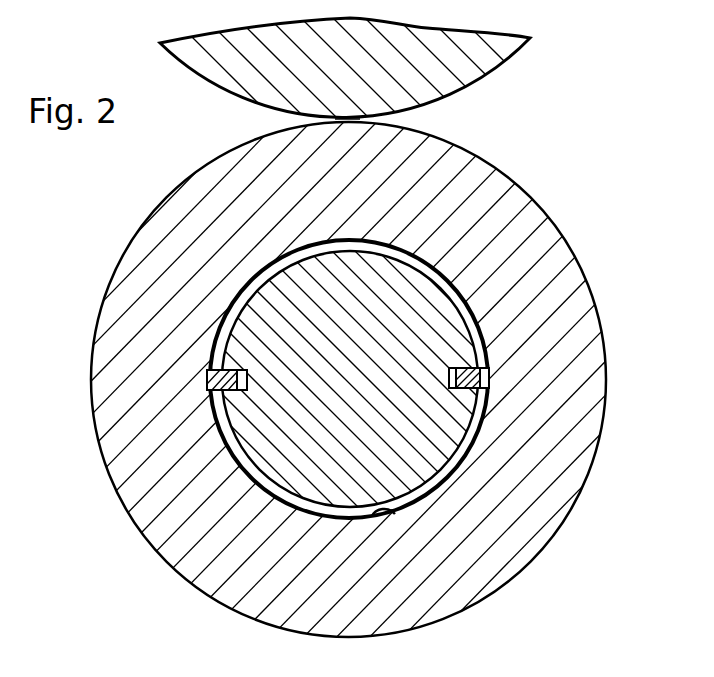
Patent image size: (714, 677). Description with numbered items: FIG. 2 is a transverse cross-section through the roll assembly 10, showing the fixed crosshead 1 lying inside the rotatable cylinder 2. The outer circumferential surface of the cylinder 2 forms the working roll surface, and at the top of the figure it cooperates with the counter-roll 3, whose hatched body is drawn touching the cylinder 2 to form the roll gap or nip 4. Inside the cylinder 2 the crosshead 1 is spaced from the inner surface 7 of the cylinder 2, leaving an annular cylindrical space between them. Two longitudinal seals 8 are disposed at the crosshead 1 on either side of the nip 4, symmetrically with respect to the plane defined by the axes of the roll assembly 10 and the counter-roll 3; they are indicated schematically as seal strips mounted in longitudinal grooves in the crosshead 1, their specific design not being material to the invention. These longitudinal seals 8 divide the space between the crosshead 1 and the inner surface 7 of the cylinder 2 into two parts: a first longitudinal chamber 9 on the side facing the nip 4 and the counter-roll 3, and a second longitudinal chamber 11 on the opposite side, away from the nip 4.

The crosshead 1 is at (263, 315).
The cylinder 2 is at (528, 228).
The counter-roll 3 is at (487, 53).
The nip 4 is at (383, 118).
The inner surface 7 is at (390, 511).
The longitudinal seals 8 is at (210, 380).
The first longitudinal chamber 9 is at (268, 272).
The roll assembly 10 is at (357, 338).
The second longitudinal chamber 11 is at (467, 440).